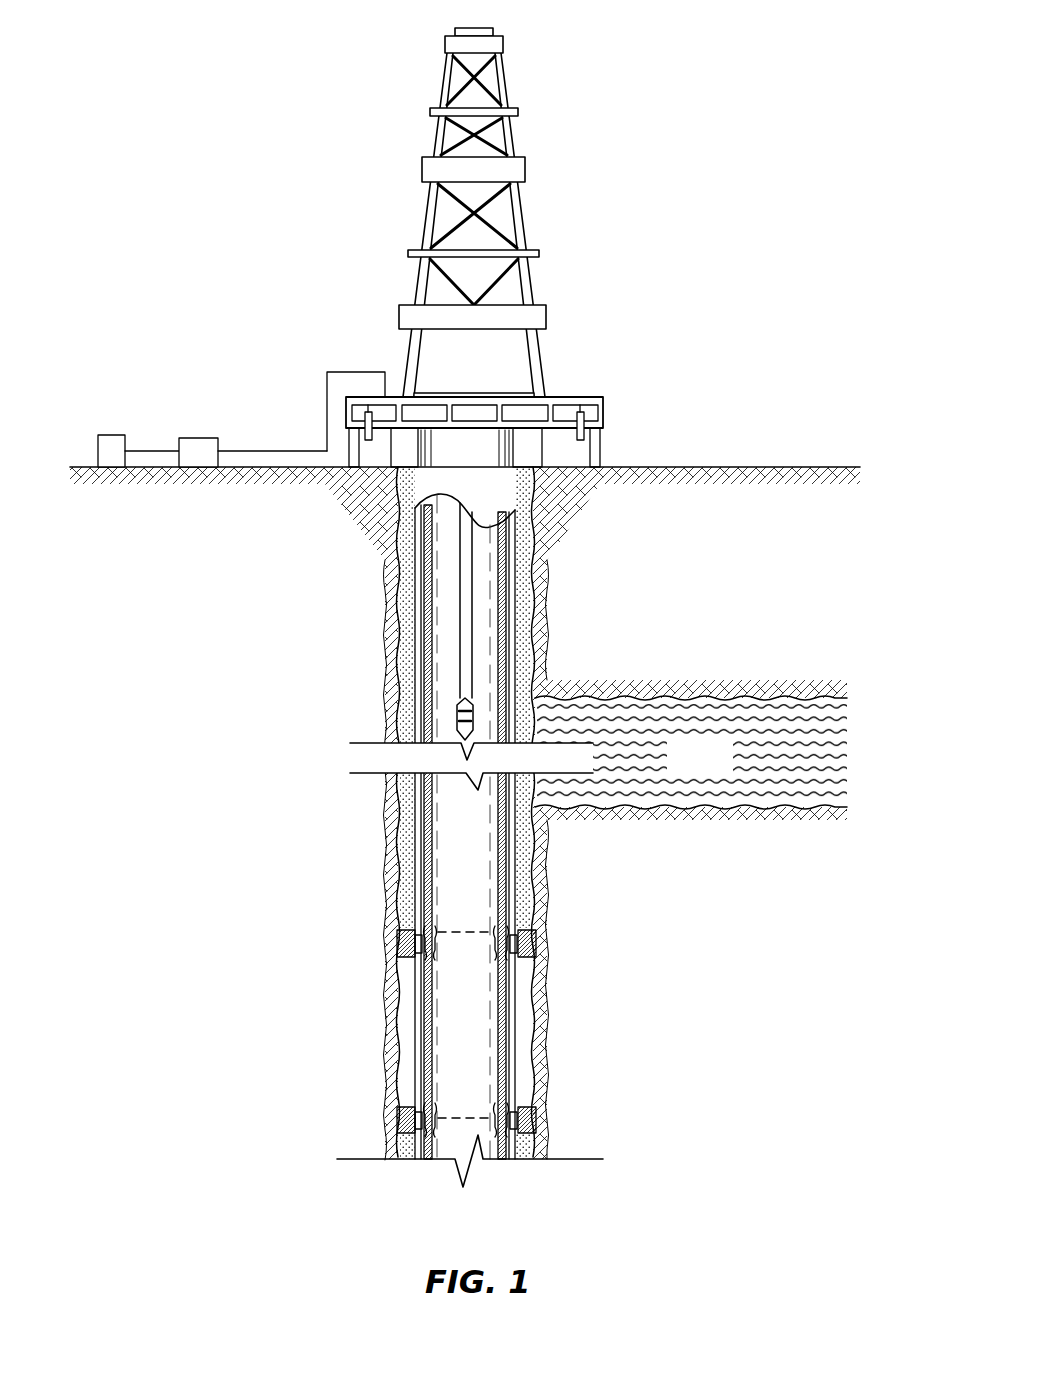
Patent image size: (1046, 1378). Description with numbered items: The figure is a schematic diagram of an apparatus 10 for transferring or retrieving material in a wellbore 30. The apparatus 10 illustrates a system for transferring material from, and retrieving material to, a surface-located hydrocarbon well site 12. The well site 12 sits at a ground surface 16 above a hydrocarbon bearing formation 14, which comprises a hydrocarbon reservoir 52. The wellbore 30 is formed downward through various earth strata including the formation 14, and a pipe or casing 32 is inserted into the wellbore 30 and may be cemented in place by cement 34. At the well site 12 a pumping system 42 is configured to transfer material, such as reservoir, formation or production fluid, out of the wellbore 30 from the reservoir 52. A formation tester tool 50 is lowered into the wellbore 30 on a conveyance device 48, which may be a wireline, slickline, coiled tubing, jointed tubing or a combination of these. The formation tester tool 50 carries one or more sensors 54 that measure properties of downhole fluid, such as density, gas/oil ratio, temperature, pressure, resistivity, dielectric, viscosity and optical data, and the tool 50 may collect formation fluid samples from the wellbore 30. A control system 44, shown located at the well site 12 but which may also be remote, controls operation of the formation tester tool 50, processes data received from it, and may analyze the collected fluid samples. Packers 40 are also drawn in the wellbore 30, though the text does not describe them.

The apparatus 10 is at (699, 78).
The well site 12 is at (594, 399).
The hydrocarbon bearing formation 14 is at (232, 601).
The ground surface 16 is at (726, 466).
The wellbore 30 is at (538, 908).
The casing 32 is at (428, 863).
The cement 34 is at (405, 826).
The packer 40 is at (398, 1118).
The pumping system 42 is at (179, 440).
The control system 44 is at (98, 440).
The conveyance device 48 is at (472, 607).
The formation tester tool 50 is at (463, 700).
The hydrocarbon reservoir 52 is at (716, 771).
The sensors 54 is at (460, 716).